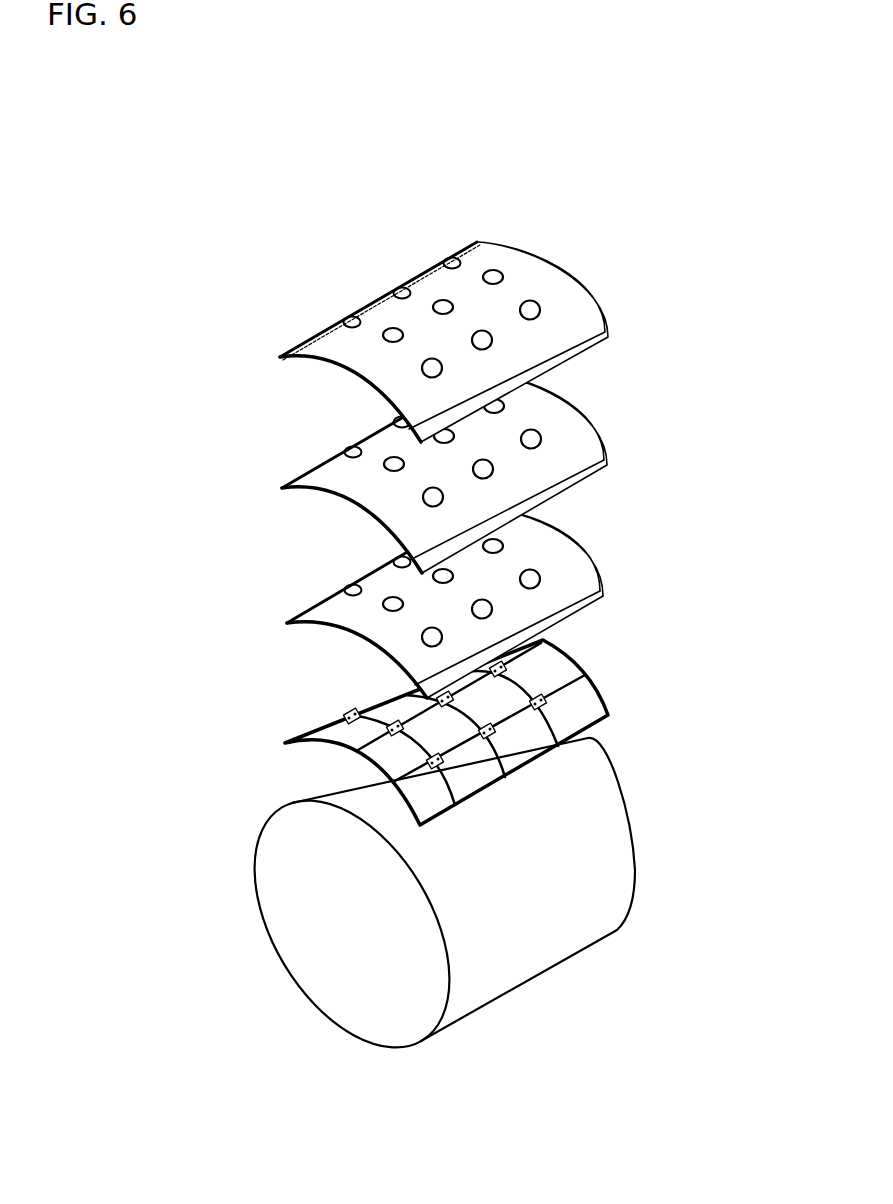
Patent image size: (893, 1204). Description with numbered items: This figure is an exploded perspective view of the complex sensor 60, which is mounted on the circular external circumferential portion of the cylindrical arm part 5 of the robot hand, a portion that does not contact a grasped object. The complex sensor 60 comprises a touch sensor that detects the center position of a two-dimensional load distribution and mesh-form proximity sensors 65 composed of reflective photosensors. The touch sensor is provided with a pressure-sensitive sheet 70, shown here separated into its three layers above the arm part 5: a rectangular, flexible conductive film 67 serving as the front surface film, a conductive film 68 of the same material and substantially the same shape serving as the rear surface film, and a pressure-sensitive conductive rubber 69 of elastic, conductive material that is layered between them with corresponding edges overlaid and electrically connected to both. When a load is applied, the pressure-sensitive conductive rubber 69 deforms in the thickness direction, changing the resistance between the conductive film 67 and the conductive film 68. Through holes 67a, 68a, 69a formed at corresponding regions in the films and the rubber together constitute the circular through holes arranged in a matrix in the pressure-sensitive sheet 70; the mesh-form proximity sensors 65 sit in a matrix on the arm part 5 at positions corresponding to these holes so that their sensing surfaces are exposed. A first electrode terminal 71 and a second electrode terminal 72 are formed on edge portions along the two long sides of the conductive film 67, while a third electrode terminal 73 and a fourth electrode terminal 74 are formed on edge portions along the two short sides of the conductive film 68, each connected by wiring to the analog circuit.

The arm part 5 is at (600, 813).
The complex sensor 60 is at (172, 660).
The mesh-form proximity sensors 65 is at (539, 711).
The conductive film 67 is at (328, 325).
The through hole 67a is at (452, 259).
The conductive film 68 is at (333, 595).
The through hole 68a is at (350, 586).
The pressure-sensitive conductive rubber 69 is at (330, 458).
The through hole 69a is at (352, 449).
The pressure-sensitive sheet 70 is at (697, 388).
The first electrode terminal 71 is at (447, 306).
The second electrode terminal 72 is at (421, 275).
The third electrode terminal 73 is at (447, 603).
The fourth electrode terminal 74 is at (585, 571).